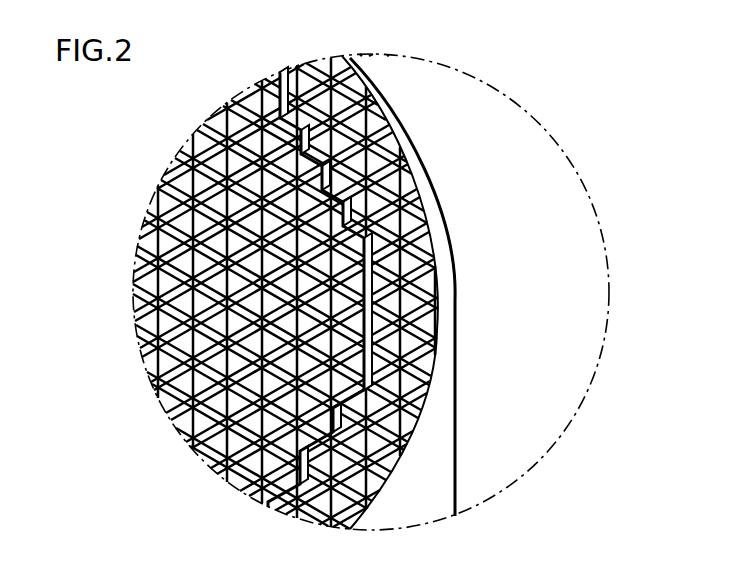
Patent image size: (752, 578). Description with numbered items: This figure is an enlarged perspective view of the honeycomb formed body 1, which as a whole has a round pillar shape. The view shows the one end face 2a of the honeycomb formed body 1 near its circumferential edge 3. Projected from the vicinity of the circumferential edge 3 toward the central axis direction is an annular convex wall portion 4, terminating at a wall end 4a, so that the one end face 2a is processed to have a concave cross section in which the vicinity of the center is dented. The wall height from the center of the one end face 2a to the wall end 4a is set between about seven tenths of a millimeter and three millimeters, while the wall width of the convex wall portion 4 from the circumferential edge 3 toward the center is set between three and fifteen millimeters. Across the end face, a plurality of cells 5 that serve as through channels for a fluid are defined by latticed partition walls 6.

The honeycomb formed body 1 is at (476, 159).
The one end face 2a is at (162, 188).
The circumferential edge 3 is at (421, 126).
The wall end 4a is at (440, 212).
The convex wall portion 4 is at (438, 292).
The cell 5 is at (228, 121).
The partition wall 6 is at (140, 256).